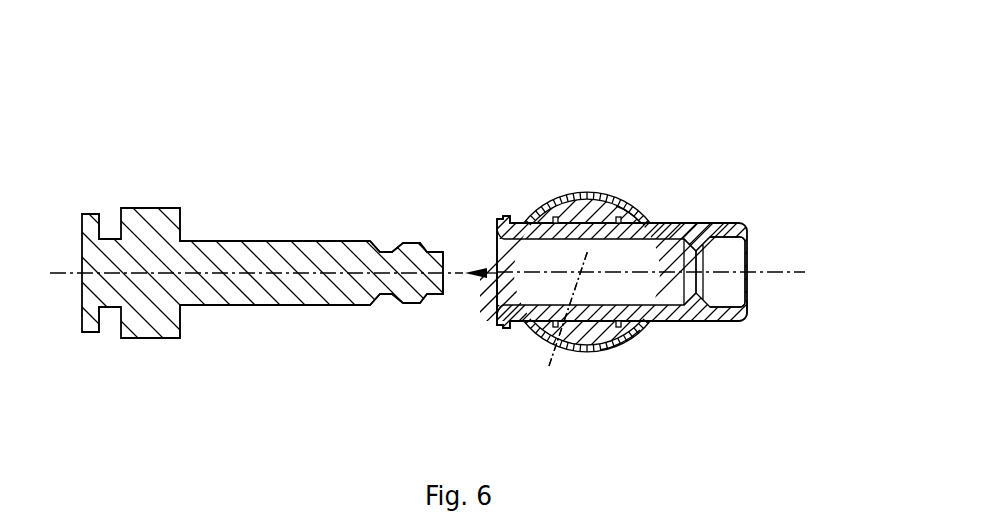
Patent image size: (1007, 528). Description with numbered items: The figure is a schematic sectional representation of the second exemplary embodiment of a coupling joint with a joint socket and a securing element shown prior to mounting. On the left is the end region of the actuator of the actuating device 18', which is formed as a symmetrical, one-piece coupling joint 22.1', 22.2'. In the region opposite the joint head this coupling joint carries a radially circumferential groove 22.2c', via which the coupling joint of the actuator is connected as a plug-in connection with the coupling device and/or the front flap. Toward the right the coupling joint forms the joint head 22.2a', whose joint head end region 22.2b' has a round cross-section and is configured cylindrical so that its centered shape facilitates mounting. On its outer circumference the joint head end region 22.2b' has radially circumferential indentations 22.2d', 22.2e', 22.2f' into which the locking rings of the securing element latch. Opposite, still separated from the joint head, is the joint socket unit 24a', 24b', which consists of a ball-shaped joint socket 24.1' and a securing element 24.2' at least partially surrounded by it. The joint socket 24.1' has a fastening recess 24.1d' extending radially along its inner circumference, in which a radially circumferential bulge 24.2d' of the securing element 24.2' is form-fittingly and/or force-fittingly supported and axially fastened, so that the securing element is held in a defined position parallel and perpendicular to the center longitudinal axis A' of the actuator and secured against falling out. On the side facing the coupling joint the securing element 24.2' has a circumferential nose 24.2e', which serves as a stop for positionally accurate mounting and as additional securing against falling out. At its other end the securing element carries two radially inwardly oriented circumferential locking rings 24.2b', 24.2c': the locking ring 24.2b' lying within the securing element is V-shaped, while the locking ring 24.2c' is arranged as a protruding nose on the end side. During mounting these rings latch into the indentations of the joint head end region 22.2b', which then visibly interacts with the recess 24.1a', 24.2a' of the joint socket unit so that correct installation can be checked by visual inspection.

The actuating device 18' is at (305, 214).
The coupling joint 22.1' is at (150, 273).
The coupling joint 22.2' is at (305, 279).
The joint head 22.2a' is at (275, 233).
The joint head end region 22.2b' is at (458, 317).
The groove 22.2c' is at (117, 242).
The indentation 22.2d' is at (383, 212).
The indentation 22.2e' is at (390, 340).
The indentation 22.2f' is at (447, 211).
The joint socket unit 24a' is at (625, 204).
The joint socket unit 24b' is at (625, 261).
The joint socket 24.1' is at (586, 261).
The recess 24.1a' is at (680, 189).
The fastening recess 24.1d' is at (639, 368).
The securing element 24.2' is at (625, 259).
The recess 24.2a' is at (788, 254).
The locking ring 24.2b' is at (754, 240).
The locking ring 24.2c' is at (788, 331).
The bulge 24.2d' is at (587, 241).
The nose 24.2e' is at (512, 222).
The center longitudinal axis A' is at (556, 316).